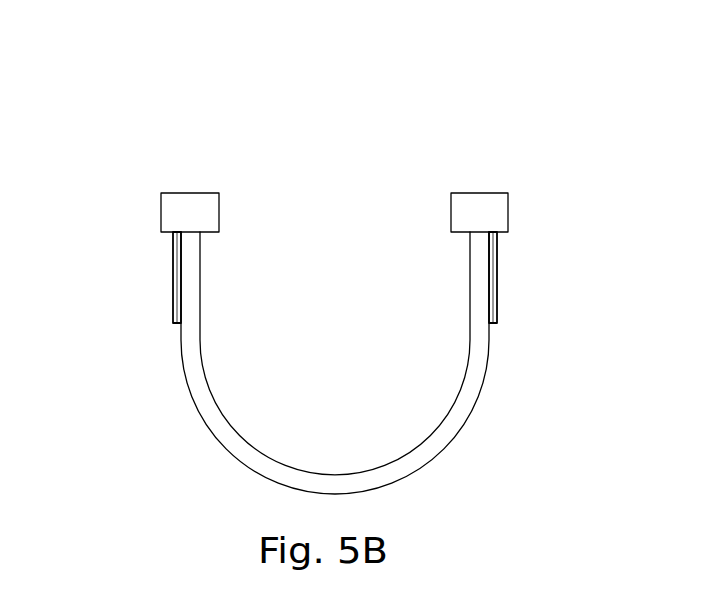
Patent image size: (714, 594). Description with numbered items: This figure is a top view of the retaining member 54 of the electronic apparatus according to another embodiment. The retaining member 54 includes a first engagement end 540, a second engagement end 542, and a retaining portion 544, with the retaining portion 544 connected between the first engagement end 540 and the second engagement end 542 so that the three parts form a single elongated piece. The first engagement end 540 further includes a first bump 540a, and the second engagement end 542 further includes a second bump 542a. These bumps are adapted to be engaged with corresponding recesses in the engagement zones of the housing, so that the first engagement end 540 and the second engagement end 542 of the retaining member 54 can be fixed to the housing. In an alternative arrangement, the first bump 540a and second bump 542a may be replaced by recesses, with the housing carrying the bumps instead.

The retaining member 54 is at (528, 92).
The first engagement end 540 is at (188, 203).
The second engagement end 542 is at (478, 203).
The retaining portion 544 is at (318, 485).
The first bump 540a is at (174, 298).
The second bump 542a is at (497, 299).